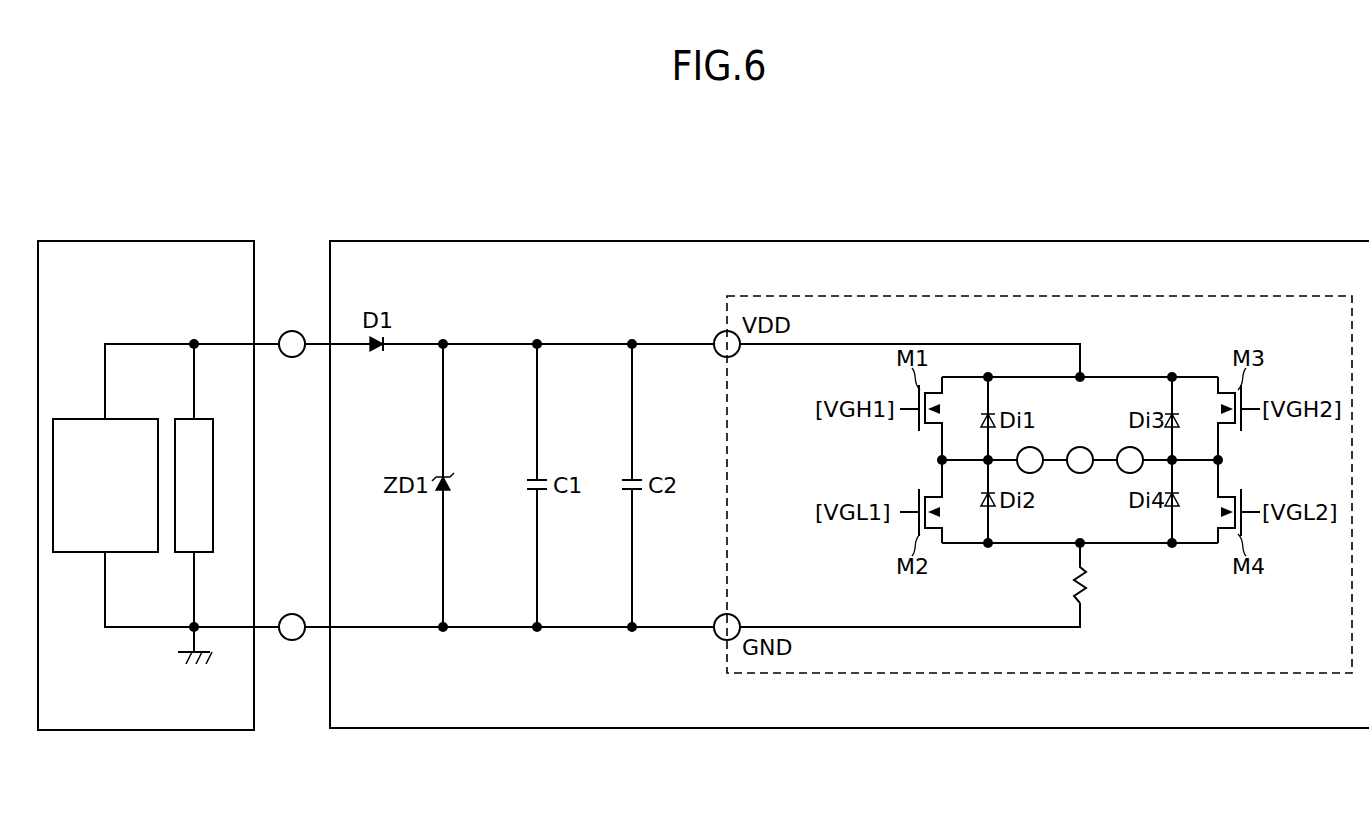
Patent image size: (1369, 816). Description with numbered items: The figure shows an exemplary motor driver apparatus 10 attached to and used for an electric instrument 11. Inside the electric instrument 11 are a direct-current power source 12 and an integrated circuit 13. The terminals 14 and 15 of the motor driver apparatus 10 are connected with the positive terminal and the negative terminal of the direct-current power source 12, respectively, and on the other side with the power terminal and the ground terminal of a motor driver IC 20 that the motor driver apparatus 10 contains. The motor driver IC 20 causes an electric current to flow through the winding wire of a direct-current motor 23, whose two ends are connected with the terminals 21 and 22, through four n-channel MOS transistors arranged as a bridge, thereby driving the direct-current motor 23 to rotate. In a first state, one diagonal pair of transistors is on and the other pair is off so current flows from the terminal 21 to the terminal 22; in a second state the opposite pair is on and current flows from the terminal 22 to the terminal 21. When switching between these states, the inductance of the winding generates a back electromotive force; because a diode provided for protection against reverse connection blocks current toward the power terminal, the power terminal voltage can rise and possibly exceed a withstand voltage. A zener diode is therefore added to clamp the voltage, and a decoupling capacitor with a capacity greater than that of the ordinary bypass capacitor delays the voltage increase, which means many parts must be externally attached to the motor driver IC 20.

The motor driver apparatus 10 is at (1222, 241).
The electric instrument 11 is at (205, 241).
The direct-current power source 12 is at (113, 419).
The integrated circuit (IC) 13 is at (197, 419).
The terminal 14 is at (292, 331).
The terminal 15 is at (292, 640).
The motor driver IC 20 is at (1222, 296).
The terminal 21 is at (1035, 447).
The terminal 22 is at (1125, 447).
The direct-current motor 23 is at (1080, 473).